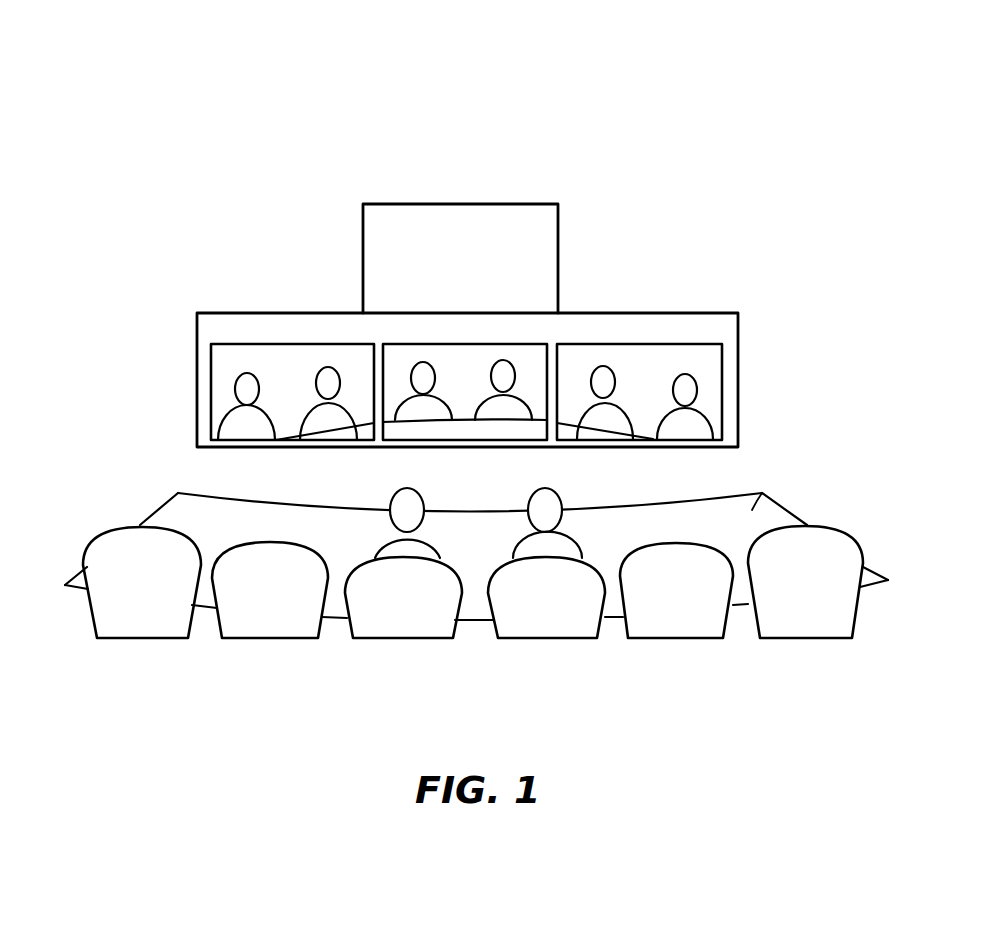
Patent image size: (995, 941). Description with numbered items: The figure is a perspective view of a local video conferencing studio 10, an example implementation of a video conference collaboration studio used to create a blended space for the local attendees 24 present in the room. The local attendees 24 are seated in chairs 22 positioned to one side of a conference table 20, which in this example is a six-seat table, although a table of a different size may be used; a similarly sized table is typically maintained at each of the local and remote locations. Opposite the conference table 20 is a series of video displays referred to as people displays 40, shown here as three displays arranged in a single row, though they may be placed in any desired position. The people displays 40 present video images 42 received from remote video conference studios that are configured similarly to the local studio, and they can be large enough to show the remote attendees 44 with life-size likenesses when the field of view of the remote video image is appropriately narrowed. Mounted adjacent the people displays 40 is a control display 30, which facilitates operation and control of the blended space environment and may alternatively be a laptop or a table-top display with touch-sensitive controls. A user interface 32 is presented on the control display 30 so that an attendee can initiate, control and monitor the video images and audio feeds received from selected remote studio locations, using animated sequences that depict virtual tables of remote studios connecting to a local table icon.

The local video conferencing studio 10 is at (193, 145).
The conference table 20 is at (762, 493).
The chairs 22 is at (395, 595).
The local attendees 24 is at (543, 517).
The control display 30 is at (362, 233).
The user interface 32 is at (473, 253).
The people displays 40 is at (700, 343).
The video images 42 is at (293, 382).
The remote attendees 44 is at (505, 407).